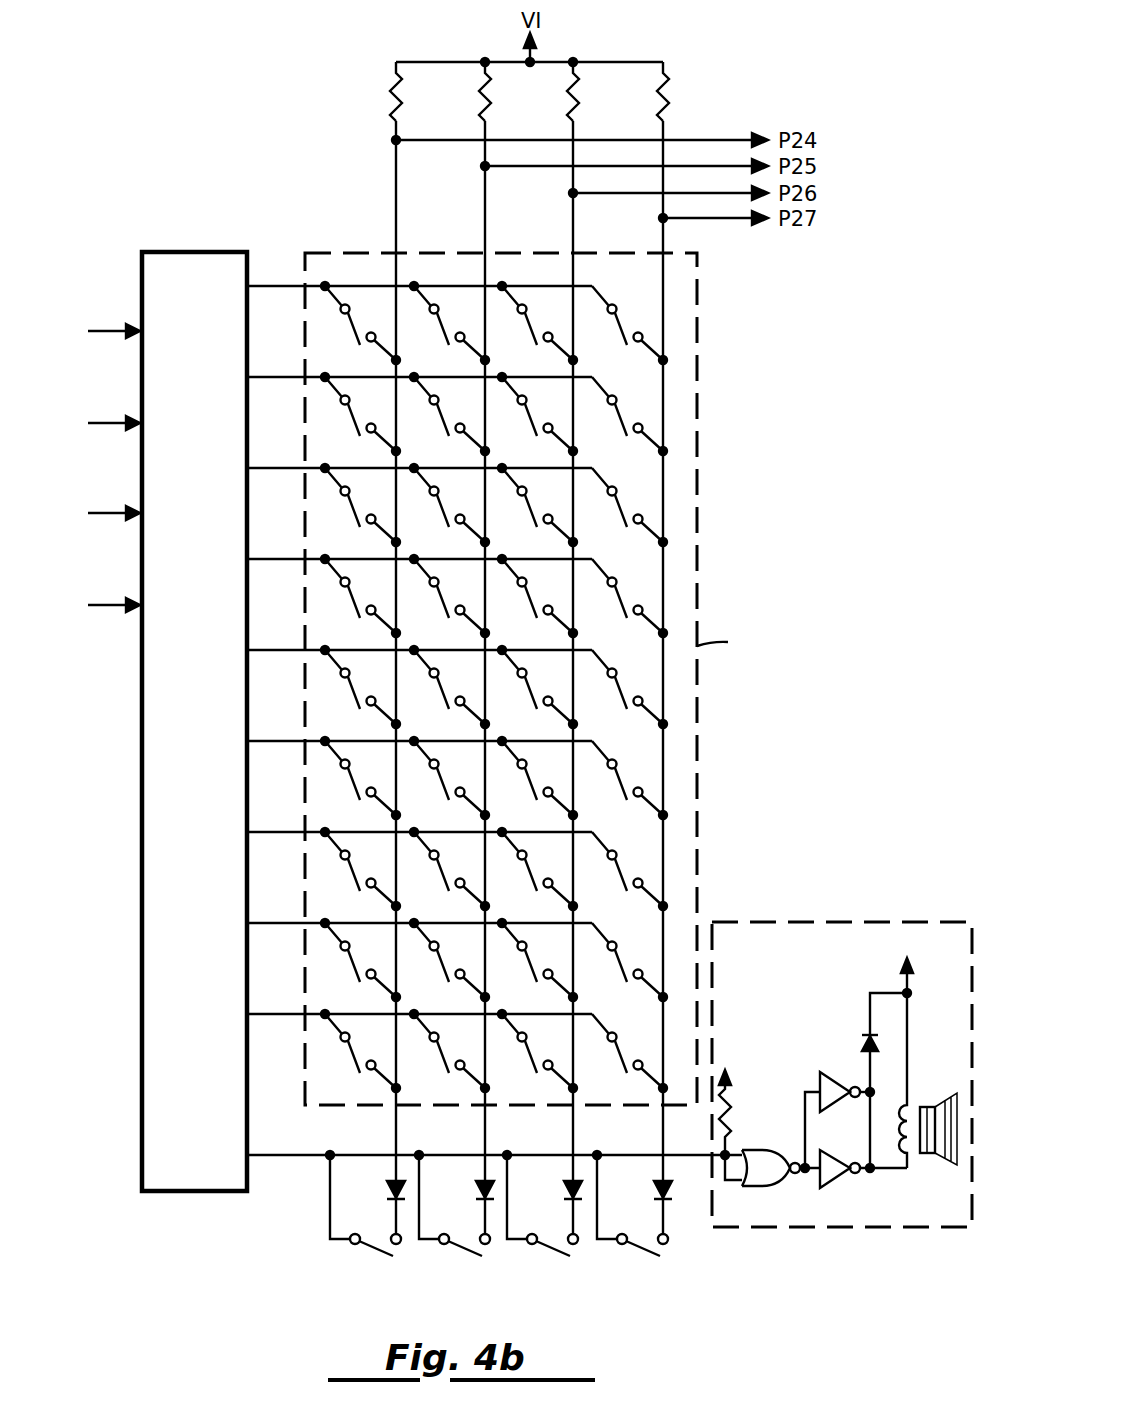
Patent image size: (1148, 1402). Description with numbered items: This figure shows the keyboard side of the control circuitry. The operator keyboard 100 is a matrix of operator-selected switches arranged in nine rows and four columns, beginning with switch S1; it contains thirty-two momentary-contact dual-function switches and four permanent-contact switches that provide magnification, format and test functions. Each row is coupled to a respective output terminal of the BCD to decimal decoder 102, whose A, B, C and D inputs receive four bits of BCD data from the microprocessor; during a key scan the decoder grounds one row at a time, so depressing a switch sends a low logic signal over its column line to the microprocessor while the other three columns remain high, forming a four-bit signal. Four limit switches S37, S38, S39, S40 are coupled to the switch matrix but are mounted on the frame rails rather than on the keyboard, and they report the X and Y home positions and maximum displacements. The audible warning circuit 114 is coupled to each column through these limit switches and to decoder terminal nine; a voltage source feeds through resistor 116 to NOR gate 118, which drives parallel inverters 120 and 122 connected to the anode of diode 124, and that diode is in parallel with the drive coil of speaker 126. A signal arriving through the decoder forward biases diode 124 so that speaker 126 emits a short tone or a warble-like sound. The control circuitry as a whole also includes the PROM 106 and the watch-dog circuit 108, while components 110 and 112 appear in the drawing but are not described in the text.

The operator keyboard 100 is at (697, 556).
The BCD to decimal decoder 102 is at (180, 250).
The programmable read-only memory (PROM) 106 is at (407, 111).
The watch-dog circuit 108 is at (496, 111).
The pull-up resistor 110 is at (584, 111).
The pull-up resistor 112 is at (674, 111).
The audible warning circuit 114 is at (842, 922).
The resistor 116 is at (730, 1127).
The NOR gate 118 is at (750, 1186).
The inverter 120 is at (836, 1078).
The inverter 122 is at (830, 1188).
The diode 124 is at (862, 1046).
The speaker 126 is at (925, 1105).
The momentary contact dual function switch S1 is at (360, 323).
The limit switch S37 is at (363, 1218).
The limit switch S38 is at (452, 1218).
The limit switch S39 is at (540, 1218).
The limit switch S40 is at (630, 1218).